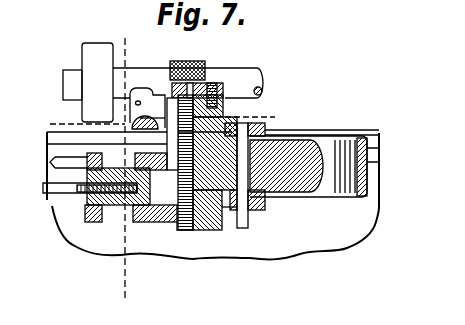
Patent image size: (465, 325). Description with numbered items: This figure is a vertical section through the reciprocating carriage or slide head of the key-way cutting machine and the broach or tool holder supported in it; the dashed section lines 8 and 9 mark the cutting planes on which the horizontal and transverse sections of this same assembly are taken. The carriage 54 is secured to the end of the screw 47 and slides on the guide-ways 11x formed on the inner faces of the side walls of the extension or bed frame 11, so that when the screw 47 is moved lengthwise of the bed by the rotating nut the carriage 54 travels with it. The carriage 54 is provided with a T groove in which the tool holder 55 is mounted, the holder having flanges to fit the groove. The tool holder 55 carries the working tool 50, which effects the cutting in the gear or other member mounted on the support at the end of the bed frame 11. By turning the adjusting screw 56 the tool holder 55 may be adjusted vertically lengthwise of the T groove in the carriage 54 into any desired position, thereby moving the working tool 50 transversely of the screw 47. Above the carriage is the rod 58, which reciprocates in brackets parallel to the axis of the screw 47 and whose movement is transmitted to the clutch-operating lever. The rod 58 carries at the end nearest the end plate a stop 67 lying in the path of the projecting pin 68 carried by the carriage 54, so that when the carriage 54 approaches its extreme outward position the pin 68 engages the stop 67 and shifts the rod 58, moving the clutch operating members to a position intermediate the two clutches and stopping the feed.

The stop 67 is at (97, 50).
The section line 9— 9 is at (143, 38).
The projecting pin 68 is at (140, 84).
The adjusting screw 56 is at (197, 68).
The rod 58 is at (251, 75).
The section line 8— 8 is at (161, 122).
The extension or bed frame 11 is at (318, 245).
The guide-ways 11x is at (393, 167).
The screw 47 is at (331, 146).
The working tool 50 is at (41, 204).
The tool holder 55 is at (112, 207).
The carriage 54 is at (210, 222).